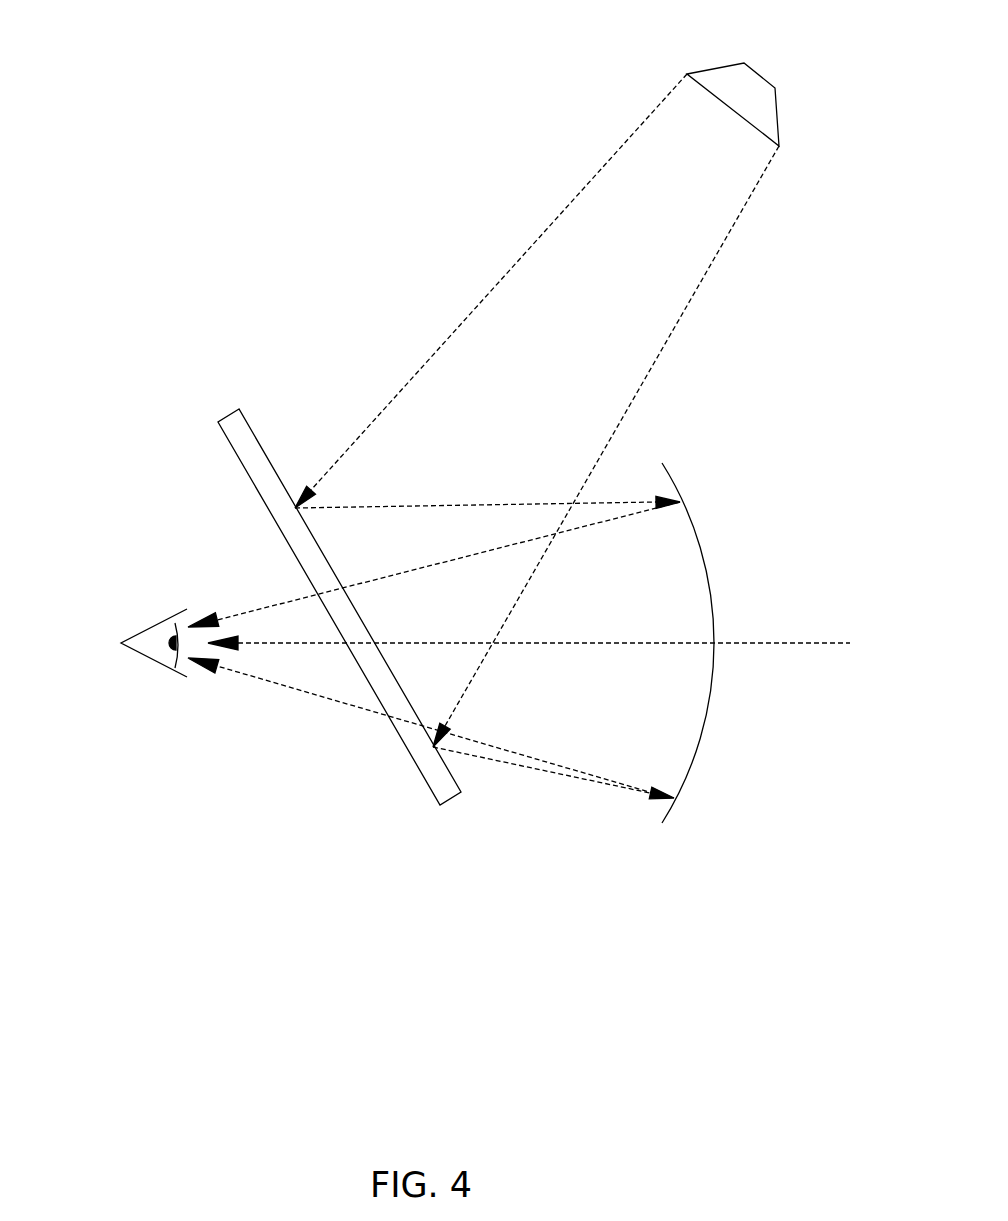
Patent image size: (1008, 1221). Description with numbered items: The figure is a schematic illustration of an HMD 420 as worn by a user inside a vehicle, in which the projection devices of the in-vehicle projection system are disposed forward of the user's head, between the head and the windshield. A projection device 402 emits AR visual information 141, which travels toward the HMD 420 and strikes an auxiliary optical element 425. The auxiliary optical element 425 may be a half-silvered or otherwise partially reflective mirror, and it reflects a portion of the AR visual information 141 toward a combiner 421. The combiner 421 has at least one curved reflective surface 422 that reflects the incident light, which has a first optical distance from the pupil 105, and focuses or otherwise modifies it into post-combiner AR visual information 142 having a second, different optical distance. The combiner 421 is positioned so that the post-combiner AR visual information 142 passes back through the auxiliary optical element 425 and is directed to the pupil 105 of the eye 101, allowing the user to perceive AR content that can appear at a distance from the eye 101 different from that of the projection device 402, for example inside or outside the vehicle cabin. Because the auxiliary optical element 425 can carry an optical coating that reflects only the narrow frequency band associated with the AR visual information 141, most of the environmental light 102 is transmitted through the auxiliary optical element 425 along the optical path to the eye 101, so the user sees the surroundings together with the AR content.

The eye 101 is at (140, 590).
The environmental light 102 is at (748, 643).
The pupil 105 is at (182, 646).
The AR visual information 141 is at (500, 282).
The post-combiner AR visual information 142 is at (288, 602).
The projection device 402 is at (705, 70).
The HMD 420 is at (157, 190).
The combiner 421 is at (698, 545).
The curved reflective surface 422 is at (681, 597).
The auxiliary optical element 425 is at (430, 787).